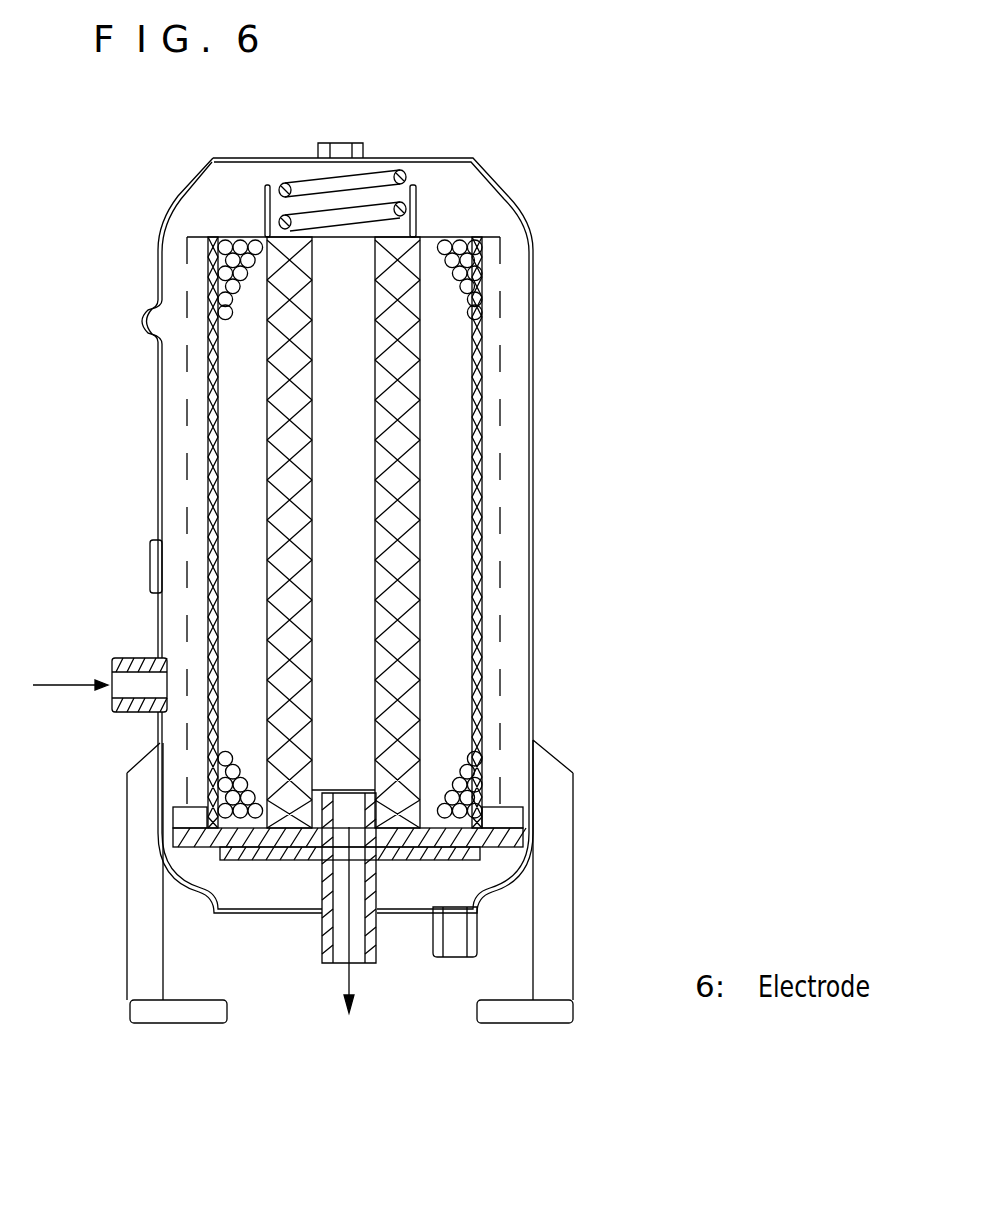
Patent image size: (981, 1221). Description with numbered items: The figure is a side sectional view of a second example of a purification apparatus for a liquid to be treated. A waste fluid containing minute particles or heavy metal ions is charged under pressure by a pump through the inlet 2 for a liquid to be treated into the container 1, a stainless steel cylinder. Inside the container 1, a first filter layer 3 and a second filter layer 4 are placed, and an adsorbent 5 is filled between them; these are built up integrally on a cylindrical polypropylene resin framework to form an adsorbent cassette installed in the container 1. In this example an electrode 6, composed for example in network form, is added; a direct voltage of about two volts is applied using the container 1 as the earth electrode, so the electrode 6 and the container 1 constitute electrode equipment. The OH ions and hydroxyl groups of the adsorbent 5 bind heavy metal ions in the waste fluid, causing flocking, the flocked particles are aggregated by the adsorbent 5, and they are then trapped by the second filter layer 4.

The container 1 is at (158, 465).
The inlet for a liquid to be treated 2 is at (120, 658).
The first filter layer 3 is at (480, 337).
The second filter layer 4 is at (415, 595).
The adsorbent 5 is at (460, 270).
The electrode 6 is at (502, 682).